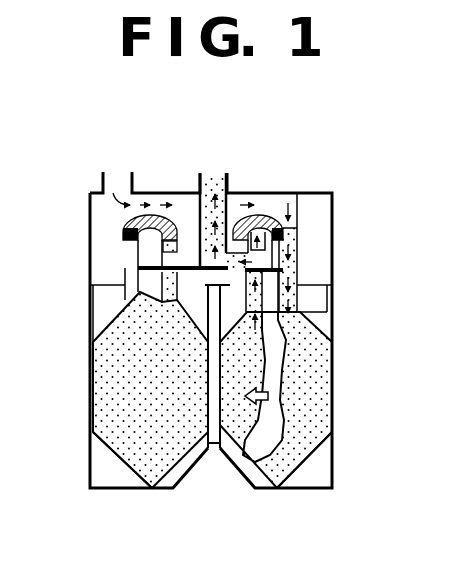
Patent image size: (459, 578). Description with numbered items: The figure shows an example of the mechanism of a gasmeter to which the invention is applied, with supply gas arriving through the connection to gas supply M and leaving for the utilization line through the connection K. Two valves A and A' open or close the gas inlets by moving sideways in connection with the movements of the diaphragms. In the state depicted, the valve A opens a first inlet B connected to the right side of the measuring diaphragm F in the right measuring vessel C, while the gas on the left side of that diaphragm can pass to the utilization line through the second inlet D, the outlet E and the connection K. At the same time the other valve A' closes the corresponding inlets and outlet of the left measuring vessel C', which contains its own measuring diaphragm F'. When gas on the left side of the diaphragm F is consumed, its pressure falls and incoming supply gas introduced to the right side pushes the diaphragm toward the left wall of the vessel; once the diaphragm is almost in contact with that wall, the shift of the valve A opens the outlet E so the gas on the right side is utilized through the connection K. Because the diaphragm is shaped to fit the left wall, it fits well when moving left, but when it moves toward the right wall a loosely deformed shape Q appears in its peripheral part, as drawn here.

The connection to gas supply M is at (116, 175).
The connection to the utilization line K is at (220, 182).
The valve A is at (258, 171).
The second inlet D is at (280, 222).
The outlet E is at (290, 195).
The first inlet B is at (293, 228).
The loosely deformed shape Q is at (272, 330).
The measuring diaphragm F is at (307, 380).
The measuring vessel C is at (337, 467).
The valve A' is at (98, 251).
The measuring diaphragm F' is at (113, 380).
The measuring vessel C' is at (84, 462).